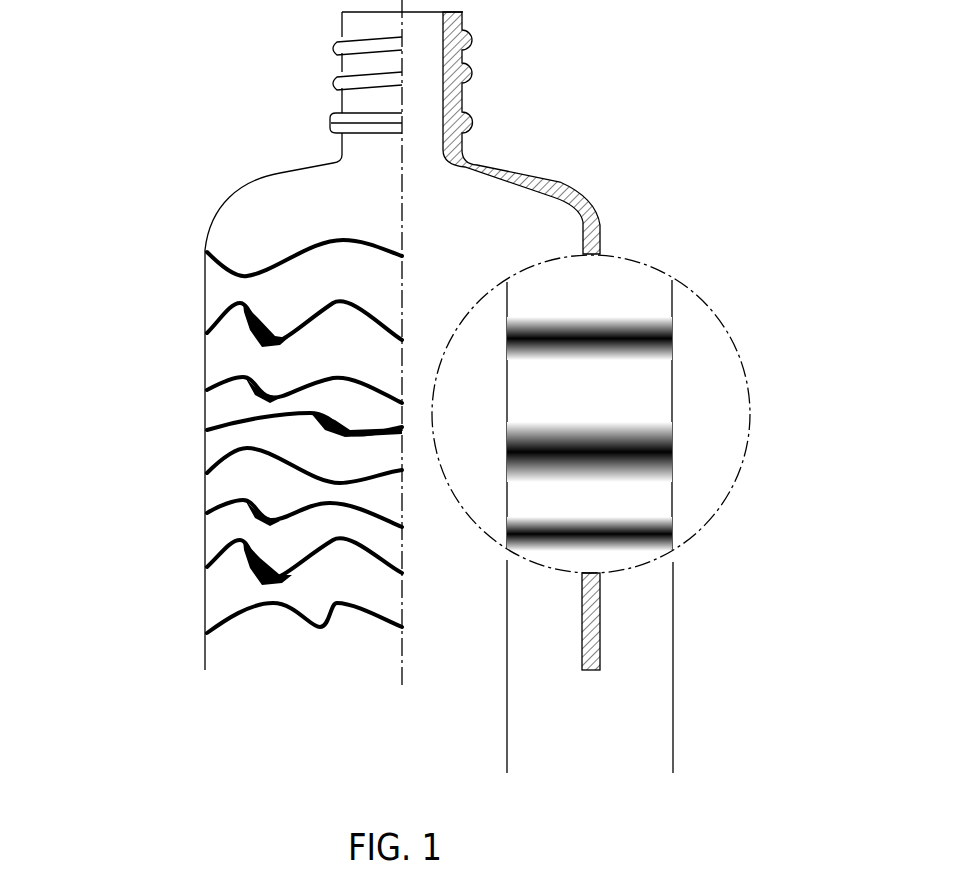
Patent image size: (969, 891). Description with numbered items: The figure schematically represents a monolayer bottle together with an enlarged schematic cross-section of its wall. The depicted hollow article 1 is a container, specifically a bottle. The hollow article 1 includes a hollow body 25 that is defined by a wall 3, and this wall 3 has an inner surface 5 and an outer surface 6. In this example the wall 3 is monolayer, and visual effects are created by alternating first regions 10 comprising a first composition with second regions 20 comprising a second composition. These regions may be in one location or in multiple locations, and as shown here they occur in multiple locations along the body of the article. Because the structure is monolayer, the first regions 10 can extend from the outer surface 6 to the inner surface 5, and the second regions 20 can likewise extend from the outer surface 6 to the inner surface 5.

The hollow article 1 is at (170, 213).
The wall 3 is at (507, 770).
The inner surface 5 is at (507, 403).
The outer surface 6 is at (667, 498).
The first regions 10 is at (222, 360).
The second regions 20 is at (250, 577).
The hollow body 25 is at (453, 230).